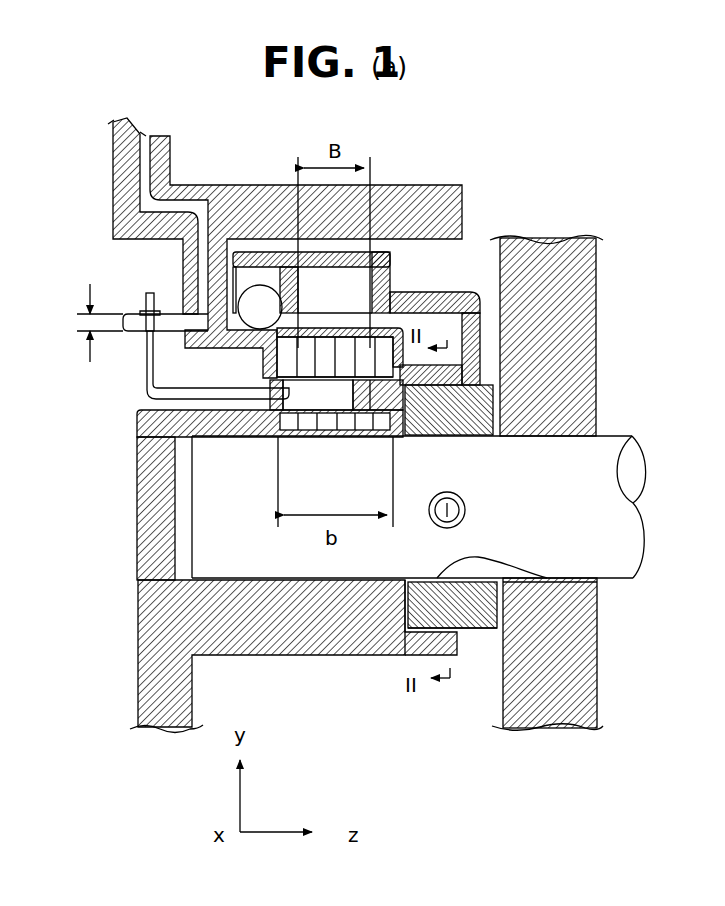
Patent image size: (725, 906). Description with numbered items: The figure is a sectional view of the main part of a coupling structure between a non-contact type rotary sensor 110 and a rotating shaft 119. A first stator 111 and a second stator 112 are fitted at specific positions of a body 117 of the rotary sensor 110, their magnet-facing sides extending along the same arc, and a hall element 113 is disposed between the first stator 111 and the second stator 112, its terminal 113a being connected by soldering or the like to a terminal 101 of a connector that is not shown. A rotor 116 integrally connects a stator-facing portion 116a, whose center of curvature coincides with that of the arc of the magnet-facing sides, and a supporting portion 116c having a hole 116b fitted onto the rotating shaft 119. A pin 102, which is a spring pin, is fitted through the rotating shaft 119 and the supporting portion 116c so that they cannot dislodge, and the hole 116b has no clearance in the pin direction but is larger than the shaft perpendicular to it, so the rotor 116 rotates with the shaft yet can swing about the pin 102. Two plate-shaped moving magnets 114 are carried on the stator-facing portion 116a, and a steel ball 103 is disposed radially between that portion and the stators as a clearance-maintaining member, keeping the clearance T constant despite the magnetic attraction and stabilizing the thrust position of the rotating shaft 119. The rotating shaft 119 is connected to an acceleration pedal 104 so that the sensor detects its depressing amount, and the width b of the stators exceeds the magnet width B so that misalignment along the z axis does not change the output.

The terminal 101 is at (143, 192).
The pin 102 is at (466, 506).
The ball 103 is at (182, 272).
The acceleration pedal 104 is at (595, 362).
The rotary sensor 110 is at (614, 205).
The first stator 111 is at (323, 432).
The second stator 112 is at (322, 350).
The hall element 113 is at (313, 397).
The terminal 113a is at (143, 377).
The moving magnet 114 is at (388, 262).
The rotor 116 is at (442, 290).
The stator-facing portion 116a is at (253, 298).
The hole 116b is at (553, 583).
The supporting portion 116c is at (480, 627).
The body 117 is at (138, 573).
The rotating shaft 119 is at (373, 567).